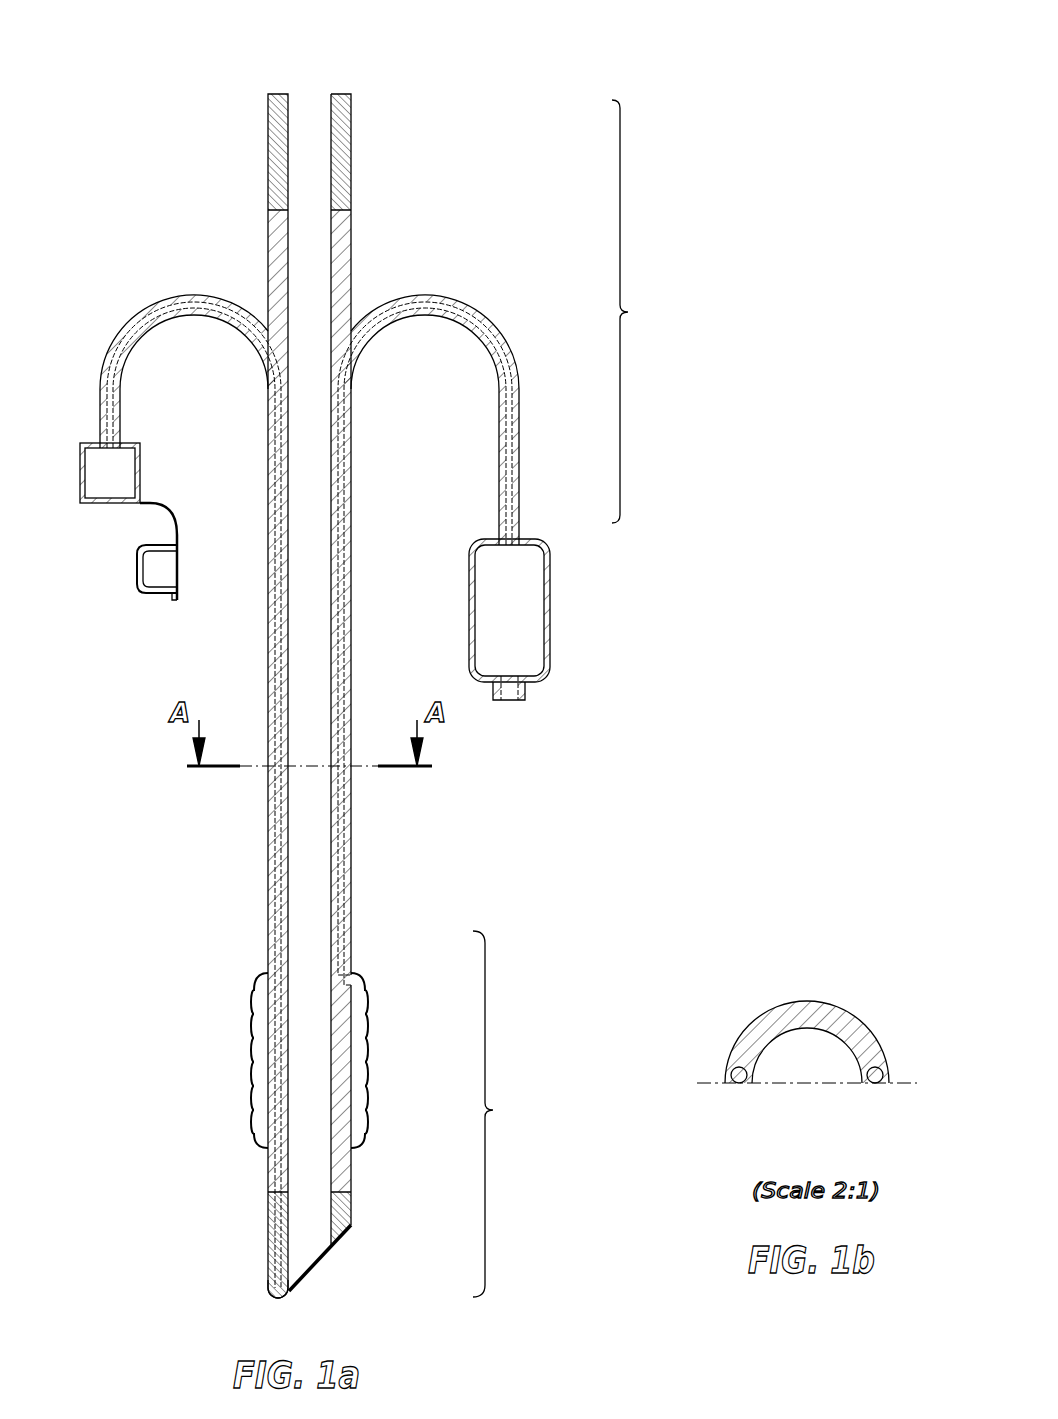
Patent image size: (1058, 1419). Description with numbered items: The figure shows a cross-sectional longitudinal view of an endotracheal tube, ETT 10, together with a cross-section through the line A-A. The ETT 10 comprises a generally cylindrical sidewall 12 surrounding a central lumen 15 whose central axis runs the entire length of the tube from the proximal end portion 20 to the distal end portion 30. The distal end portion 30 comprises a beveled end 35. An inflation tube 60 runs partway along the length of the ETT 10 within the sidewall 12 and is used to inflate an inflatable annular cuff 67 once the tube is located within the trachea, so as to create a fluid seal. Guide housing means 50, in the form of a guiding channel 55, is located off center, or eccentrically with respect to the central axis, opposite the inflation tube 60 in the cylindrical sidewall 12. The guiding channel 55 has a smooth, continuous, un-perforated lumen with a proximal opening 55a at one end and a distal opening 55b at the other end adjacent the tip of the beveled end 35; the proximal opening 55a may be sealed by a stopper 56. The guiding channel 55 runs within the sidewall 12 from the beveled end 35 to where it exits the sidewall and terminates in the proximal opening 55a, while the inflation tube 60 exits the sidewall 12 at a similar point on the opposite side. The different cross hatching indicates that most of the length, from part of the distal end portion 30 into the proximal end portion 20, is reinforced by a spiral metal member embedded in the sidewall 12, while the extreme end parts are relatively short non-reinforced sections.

In FIG. 1a, the ETT 10 is at (698, 117).
In FIG. 1b, the cylindrical sidewall 12 is at (757, 1032).
In FIG. 1b, the central lumen 15 is at (833, 1060).
In FIG. 1a, the proximal end portion 20 is at (636, 311).
In FIG. 1a, the distal end portion 30 is at (497, 1114).
In FIG. 1a, the beveled end 35 is at (318, 1261).
In FIG. 1a, the guide housing means 50 is at (121, 331).
In FIG. 1b, the guide housing means 50 is at (730, 1074).
In FIG. 1a, the guiding channel 55 is at (276, 935).
In FIG. 1a, the proximal opening 55a is at (143, 470).
In FIG. 1a, the distal opening 55b is at (270, 1288).
In FIG. 1a, the stopper 56 is at (177, 565).
In FIG. 1a, the inflation tube 60 is at (496, 328).
In FIG. 1b, the inflation tube 60 is at (882, 1073).
In FIG. 1a, the inflatable annular cuff 67 is at (364, 1050).